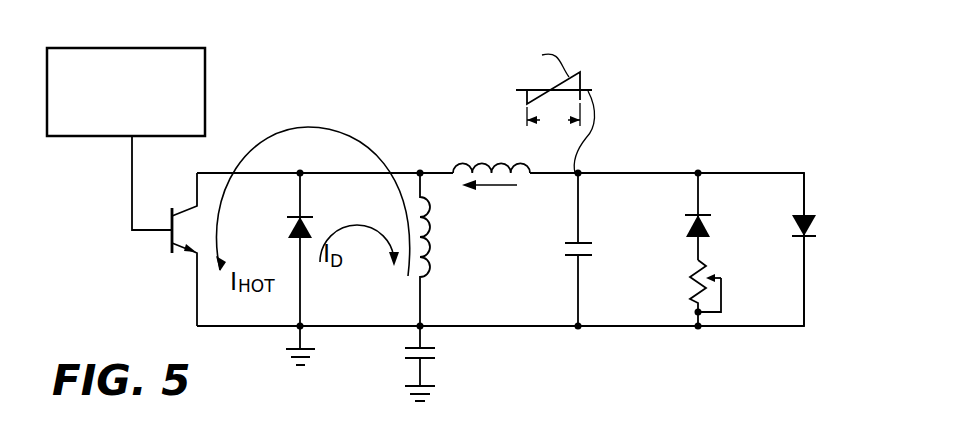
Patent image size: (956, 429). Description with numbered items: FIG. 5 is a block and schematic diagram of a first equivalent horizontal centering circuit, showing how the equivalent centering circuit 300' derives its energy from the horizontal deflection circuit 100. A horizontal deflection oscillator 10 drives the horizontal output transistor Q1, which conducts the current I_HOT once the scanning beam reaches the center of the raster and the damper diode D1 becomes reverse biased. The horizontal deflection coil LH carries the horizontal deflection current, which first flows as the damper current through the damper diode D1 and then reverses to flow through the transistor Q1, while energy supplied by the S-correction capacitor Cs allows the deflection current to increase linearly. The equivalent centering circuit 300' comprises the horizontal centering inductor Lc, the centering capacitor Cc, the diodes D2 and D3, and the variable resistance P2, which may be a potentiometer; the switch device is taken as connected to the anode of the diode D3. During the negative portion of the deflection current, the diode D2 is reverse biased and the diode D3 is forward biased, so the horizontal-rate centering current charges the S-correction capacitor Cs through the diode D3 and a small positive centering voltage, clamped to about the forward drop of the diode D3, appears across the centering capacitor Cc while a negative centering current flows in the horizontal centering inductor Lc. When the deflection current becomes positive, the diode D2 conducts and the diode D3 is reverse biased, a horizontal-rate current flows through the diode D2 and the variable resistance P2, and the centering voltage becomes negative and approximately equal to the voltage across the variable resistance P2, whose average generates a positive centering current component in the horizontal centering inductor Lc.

The horizontal deflection oscillator 10 is at (145, 48).
The horizontal deflection circuit 100 is at (293, 251).
The equivalent centering circuit 300' is at (632, 187).
The horizontal output transistor Q1 is at (192, 249).
The damper diode D1 is at (319, 163).
The horizontal deflection coil LH is at (442, 249).
The S-correction capacitor Cs is at (437, 363).
The horizontal centering inductor Lc is at (491, 154).
The centering capacitor Cc is at (595, 249).
The diode D2 is at (714, 216).
The variable resistance P2 is at (723, 293).
The diode D3 is at (821, 249).